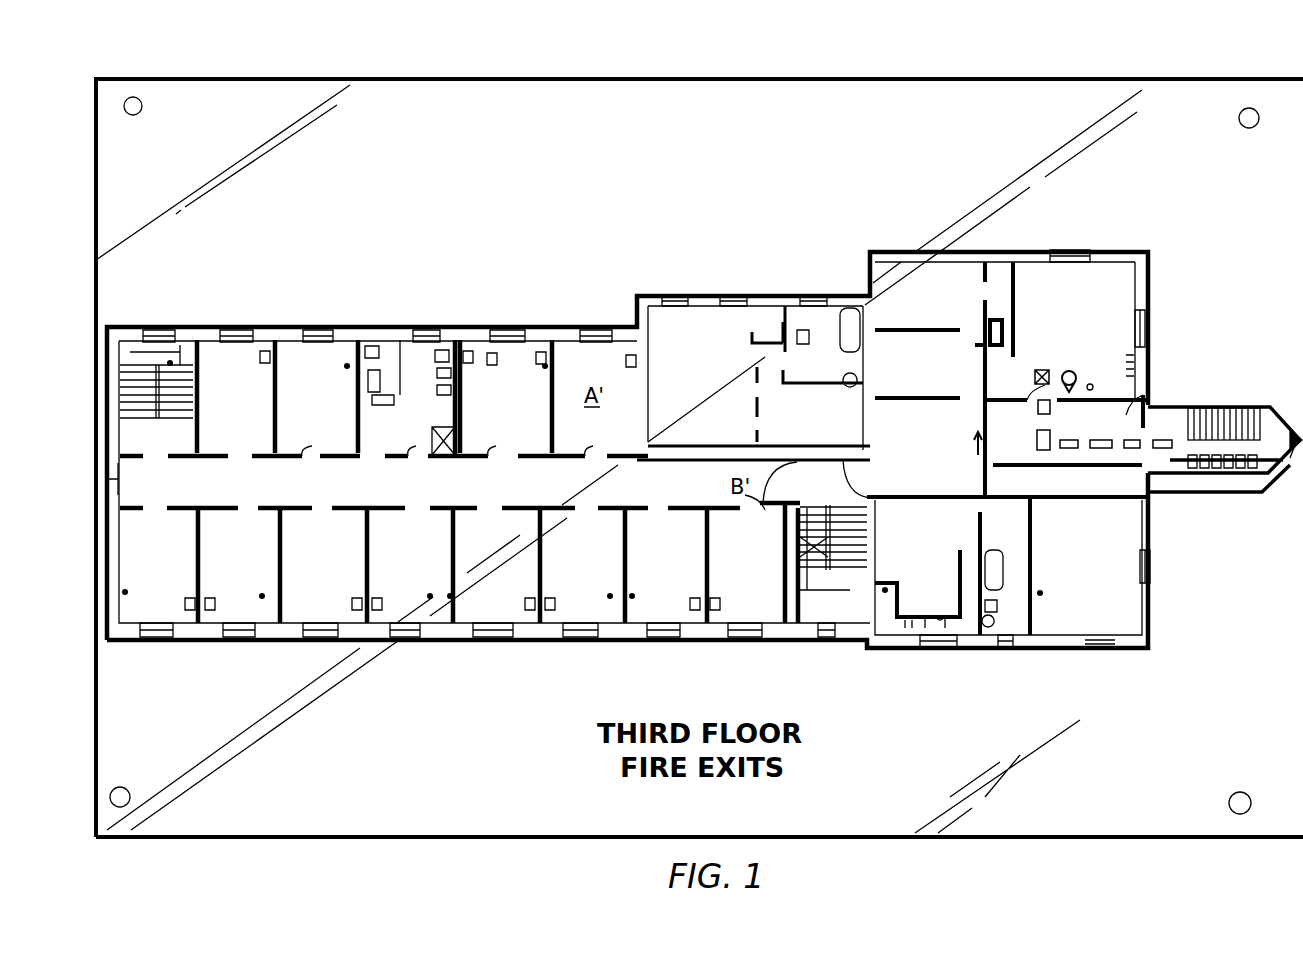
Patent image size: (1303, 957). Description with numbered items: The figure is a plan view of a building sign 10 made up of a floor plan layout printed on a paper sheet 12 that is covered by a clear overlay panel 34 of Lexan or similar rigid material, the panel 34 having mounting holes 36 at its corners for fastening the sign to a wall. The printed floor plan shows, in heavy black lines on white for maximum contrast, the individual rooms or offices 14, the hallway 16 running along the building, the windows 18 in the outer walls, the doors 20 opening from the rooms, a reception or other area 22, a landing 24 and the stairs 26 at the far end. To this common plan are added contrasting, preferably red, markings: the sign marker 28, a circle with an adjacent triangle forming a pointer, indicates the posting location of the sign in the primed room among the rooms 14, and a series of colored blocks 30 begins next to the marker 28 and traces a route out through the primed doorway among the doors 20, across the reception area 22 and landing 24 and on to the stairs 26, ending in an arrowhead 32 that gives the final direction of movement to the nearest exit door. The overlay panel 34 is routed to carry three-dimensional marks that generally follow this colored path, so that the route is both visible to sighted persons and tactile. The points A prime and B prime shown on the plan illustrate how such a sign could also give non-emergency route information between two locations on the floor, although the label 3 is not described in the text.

The building sign 10 is at (996, 75).
The sheet 12 is at (658, 292).
The rooms or offices 14 is at (241, 424).
The hallway 16 is at (470, 498).
The windows 18 is at (316, 330).
The doors 20 is at (306, 458).
The reception area 22 is at (1135, 408).
The landing 24 is at (1178, 410).
The stairs 26 is at (1228, 450).
The sign marker 28 is at (1078, 372).
The colored blocks 30 is at (1040, 370).
The arrowhead 32 is at (1293, 425).
The direction arrow 3 is at (1134, 434).
The clear overlay panel 34 is at (1153, 770).
The mounting holes 36 is at (142, 106).